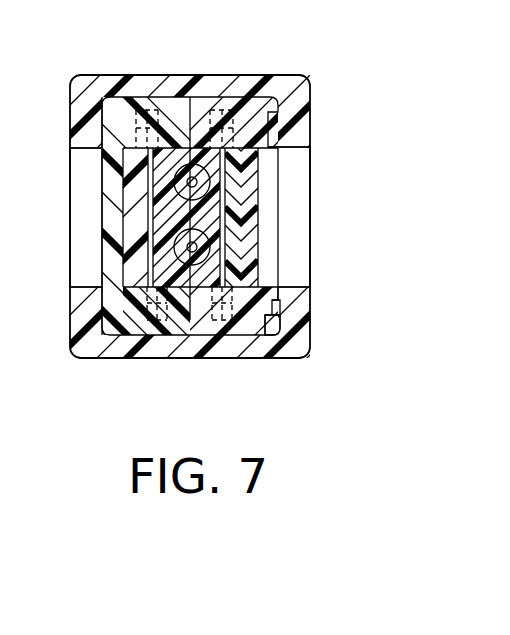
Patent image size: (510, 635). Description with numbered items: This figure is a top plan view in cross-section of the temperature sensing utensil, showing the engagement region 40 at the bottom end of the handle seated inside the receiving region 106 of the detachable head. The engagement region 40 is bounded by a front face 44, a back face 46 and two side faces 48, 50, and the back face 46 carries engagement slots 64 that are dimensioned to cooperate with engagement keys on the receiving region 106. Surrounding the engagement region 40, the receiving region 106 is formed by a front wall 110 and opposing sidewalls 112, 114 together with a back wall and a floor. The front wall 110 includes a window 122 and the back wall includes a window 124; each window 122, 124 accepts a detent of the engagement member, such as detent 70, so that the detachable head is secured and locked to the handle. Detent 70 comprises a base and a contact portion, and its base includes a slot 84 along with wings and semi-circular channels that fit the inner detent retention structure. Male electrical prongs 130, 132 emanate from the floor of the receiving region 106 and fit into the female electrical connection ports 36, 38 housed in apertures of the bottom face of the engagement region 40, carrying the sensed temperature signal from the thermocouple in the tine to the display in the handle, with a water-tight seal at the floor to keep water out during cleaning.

The electrical connection port 36 is at (214, 148).
The electrical connection port 38 is at (212, 336).
The engagement region 40 is at (105, 95).
The front face 44 is at (103, 258).
The back face 46 is at (262, 215).
The side face 48 is at (140, 320).
The side face 50 is at (157, 98).
The engagement slots 64 is at (265, 322).
The detent 70 is at (262, 288).
The slot 84 is at (212, 186).
The receiving region 106 is at (307, 352).
The front wall 110 is at (70, 105).
The sidewall 112 is at (208, 84).
The sidewall 114 is at (190, 343).
The window 122 is at (72, 178).
The window 124 is at (297, 252).
The male electrical prong 130 is at (190, 255).
The male electrical prong 132 is at (268, 130).